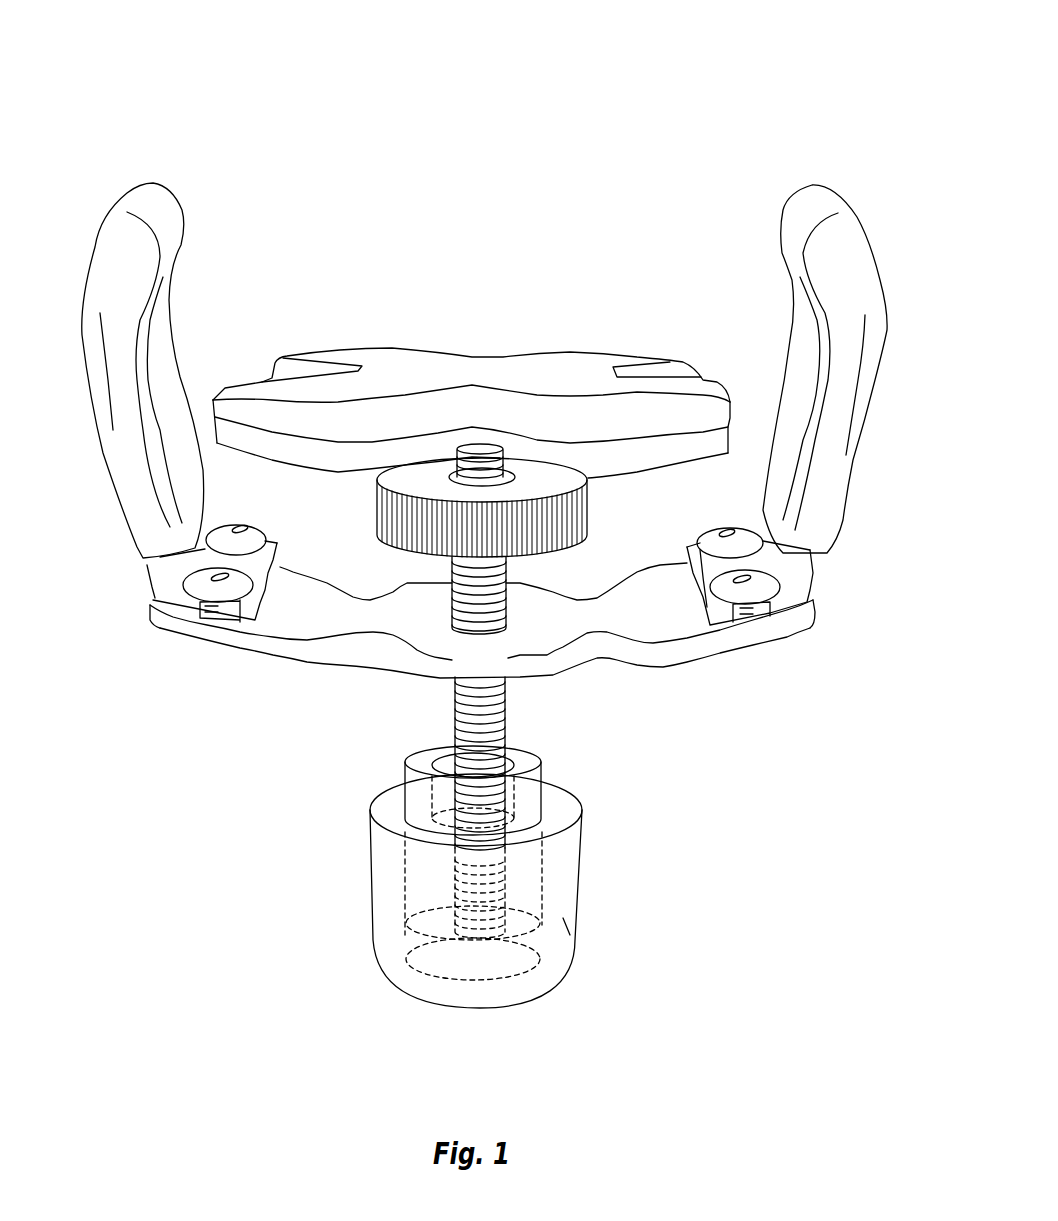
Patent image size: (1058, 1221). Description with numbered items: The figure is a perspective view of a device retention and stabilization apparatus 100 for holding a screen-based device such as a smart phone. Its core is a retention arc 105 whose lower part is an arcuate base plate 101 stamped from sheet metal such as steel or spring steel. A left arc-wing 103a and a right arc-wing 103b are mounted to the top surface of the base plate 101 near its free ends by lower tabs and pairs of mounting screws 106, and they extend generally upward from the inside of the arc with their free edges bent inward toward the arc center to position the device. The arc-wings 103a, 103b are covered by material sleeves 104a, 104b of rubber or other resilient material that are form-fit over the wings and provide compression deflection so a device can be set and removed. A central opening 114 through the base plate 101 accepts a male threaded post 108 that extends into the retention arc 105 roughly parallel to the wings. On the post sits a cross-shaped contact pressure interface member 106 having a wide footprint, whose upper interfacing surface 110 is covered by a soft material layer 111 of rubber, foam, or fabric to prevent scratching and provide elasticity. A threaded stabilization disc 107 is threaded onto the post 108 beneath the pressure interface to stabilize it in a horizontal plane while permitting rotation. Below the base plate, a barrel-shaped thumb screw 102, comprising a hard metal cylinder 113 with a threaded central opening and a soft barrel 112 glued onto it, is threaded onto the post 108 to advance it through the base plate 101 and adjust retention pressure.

The device retention and stabilization apparatus 100 is at (488, 142).
The base plate 101 is at (290, 667).
The thumb screw 102 is at (628, 887).
The left arc-wing 103a is at (143, 563).
The right arc-wing 103b is at (822, 577).
The material sleeve 104a is at (183, 255).
The material sleeve 104b is at (783, 263).
The retention arc 105 is at (318, 772).
The contact pressure interface member 106 is at (425, 330).
The threaded stabilization disc 107 is at (590, 498).
The threaded post 108 is at (503, 698).
The upper interfacing surface 110 is at (630, 461).
The material layer 111 is at (566, 372).
The barrel 112 is at (367, 897).
The cylinder 113 is at (573, 788).
The central opening 114 is at (445, 619).